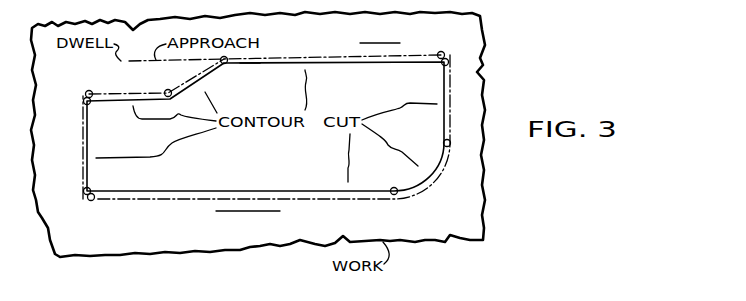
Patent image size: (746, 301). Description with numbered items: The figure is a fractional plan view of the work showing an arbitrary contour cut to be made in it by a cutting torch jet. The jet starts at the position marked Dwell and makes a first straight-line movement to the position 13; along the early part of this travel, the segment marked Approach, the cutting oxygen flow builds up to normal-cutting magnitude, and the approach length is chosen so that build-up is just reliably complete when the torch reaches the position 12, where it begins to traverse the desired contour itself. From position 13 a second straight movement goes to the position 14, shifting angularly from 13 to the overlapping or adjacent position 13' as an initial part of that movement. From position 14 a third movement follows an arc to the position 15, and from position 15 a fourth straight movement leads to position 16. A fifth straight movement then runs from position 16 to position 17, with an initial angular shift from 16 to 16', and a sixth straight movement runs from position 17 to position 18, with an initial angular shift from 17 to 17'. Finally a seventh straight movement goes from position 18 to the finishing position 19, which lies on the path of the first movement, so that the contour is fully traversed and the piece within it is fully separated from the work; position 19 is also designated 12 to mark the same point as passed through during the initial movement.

The initial contour entry position 12 is at (227, 65).
The first corner position 13 is at (456, 42).
The overlapping adjacent position 13' is at (460, 70).
The arc start position 14 is at (449, 147).
The arc end position 15 is at (397, 195).
The lower corner position 16 is at (87, 210).
The overlapping adjacent position 16' is at (72, 184).
The upper corner position 17 is at (69, 100).
The overlapping adjacent position 17' is at (89, 79).
The diagonal start position 18 is at (171, 97).
The finishing position 19 is at (250, 64).